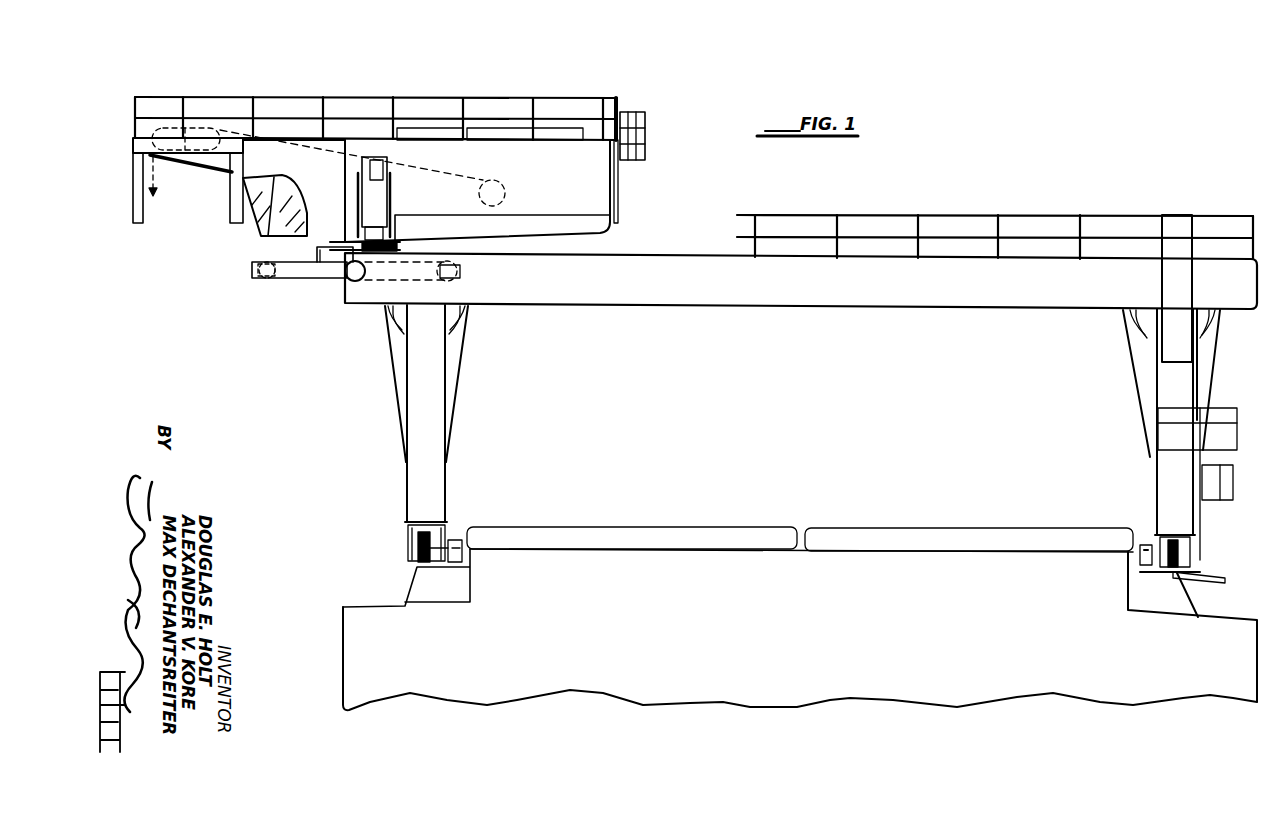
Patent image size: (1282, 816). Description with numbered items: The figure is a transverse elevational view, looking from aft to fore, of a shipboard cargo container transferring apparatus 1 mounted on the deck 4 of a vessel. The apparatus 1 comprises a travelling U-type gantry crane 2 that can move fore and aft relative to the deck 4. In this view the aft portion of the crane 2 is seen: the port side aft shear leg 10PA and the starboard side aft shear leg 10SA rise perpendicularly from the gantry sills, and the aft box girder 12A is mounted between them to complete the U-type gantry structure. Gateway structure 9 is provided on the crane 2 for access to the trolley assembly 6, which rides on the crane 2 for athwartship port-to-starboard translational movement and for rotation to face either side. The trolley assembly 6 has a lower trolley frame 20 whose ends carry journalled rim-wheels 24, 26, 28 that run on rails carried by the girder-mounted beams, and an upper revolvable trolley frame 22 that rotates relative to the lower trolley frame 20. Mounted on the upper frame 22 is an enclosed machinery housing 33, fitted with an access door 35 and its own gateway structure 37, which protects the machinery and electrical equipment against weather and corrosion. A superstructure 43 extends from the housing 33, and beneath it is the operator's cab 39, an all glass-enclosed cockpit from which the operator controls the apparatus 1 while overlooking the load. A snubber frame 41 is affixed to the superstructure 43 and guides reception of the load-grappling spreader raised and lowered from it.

The shipboard cargo container transferring apparatus 1 is at (795, 392).
The travelling U-type gantry crane 2 is at (1216, 254).
The deck 4 is at (372, 622).
The trolley assembly 6 is at (397, 193).
The gateway structure 9 is at (1032, 206).
The aft box girder 12A is at (667, 291).
The port side aft shear leg 10PA is at (430, 467).
The starboard side aft shear leg 10SA is at (1165, 468).
The lower trolley frame 20 is at (330, 272).
The upper revolvable trolley frame 22 is at (327, 228).
The rim-wheel 24 is at (267, 279).
The rim-wheel 26 is at (360, 278).
The rim-wheel 28 is at (458, 286).
The enclosed machinery housing 33 is at (600, 204).
The access door 35 is at (384, 203).
The gateway structure 37 is at (513, 106).
The operator's cab 39 is at (298, 203).
The snubber frame 41 is at (140, 217).
The superstructure 43 is at (222, 170).